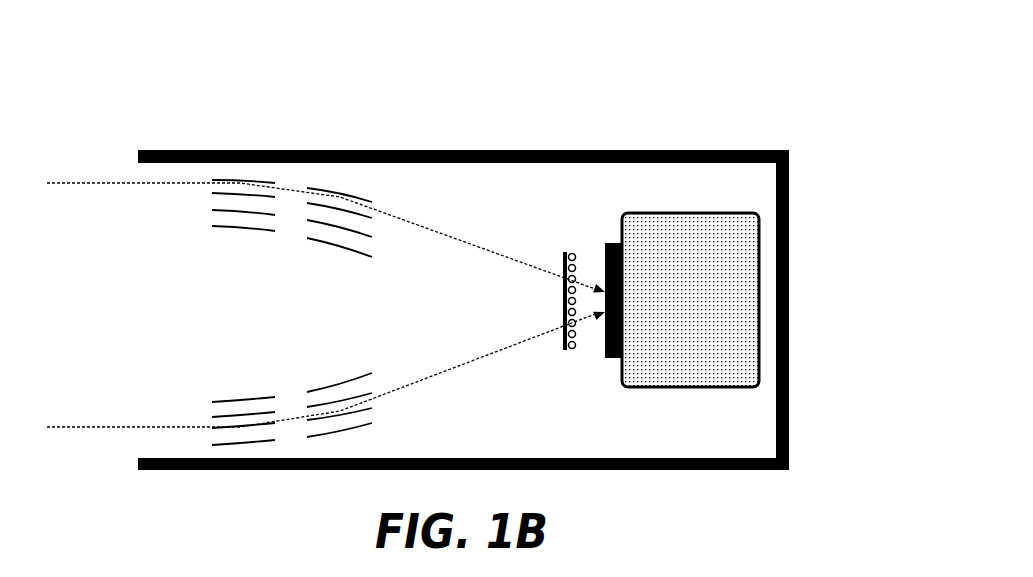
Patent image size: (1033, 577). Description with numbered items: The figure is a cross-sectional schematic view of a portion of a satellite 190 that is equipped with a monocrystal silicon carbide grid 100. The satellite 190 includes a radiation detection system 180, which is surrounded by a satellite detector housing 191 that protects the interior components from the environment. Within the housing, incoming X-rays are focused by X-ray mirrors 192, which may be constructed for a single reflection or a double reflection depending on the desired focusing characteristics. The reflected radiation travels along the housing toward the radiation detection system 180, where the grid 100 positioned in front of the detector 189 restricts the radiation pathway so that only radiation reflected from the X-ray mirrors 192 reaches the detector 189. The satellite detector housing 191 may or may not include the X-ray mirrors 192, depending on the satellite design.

The monocrystal silicon carbide grid 100 is at (566, 240).
The radiation detection system 180 is at (715, 190).
The detector 189 is at (599, 272).
The satellite 190 is at (493, 258).
The satellite detector housing 191 is at (318, 152).
The X-ray mirrors 192 is at (234, 172).